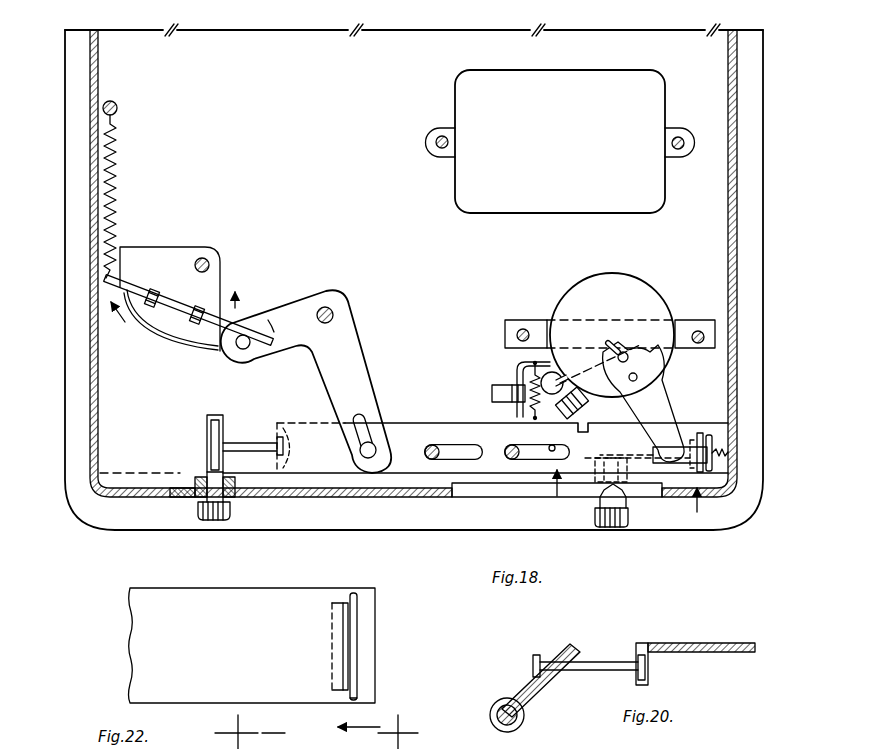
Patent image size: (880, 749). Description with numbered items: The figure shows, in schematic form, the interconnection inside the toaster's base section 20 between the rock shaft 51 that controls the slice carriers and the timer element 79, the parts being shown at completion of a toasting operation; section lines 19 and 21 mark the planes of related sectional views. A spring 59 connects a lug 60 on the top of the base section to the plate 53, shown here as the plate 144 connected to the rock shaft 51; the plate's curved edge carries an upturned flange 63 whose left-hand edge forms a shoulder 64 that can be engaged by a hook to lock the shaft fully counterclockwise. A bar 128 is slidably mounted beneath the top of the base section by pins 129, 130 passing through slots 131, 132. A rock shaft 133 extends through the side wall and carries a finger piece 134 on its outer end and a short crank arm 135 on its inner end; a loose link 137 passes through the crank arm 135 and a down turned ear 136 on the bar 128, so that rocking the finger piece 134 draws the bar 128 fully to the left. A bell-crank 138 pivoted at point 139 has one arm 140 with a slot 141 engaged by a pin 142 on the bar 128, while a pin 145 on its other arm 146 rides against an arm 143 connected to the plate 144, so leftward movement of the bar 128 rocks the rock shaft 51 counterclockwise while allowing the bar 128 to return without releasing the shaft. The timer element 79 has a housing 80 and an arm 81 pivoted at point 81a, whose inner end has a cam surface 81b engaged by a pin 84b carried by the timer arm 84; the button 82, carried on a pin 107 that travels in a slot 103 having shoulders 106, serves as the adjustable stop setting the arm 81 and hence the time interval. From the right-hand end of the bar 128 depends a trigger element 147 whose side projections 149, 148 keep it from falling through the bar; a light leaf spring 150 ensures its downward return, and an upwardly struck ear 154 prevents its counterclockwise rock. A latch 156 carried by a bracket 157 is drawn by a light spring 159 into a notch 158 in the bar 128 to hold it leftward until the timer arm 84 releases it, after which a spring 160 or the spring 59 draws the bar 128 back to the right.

In FIG. 18, the base section 20 is at (145, 455).
In FIG. 18, the section line 19- 19 is at (622, 493).
In FIG. 22, the section line 21- 21 is at (359, 717).
In FIG. 18, the lug 60 is at (119, 109).
In FIG. 18, the spring 59 is at (115, 198).
In FIG. 18, the rock shaft 51 is at (212, 262).
In FIG. 18, the plate 53 is at (205, 287).
In FIG. 18, the plate 144 is at (170, 299).
In FIG. 18, the shoulder 64 is at (119, 328).
In FIG. 18, the upturned flange 63 is at (180, 347).
In FIG. 18, the arm 143 is at (208, 337).
In FIG. 18, the pin 145 is at (243, 351).
In FIG. 18, the bell-crank arm 146 is at (280, 309).
In FIG. 18, the pivot point 139 is at (338, 302).
In FIG. 18, the bell-crank 138 is at (362, 345).
In FIG. 18, the bell-crank arm 140 is at (352, 378).
In FIG. 18, the slot 141 is at (361, 427).
In FIG. 18, the pin 142 is at (361, 452).
In FIG. 18, the down turned ear 136 is at (289, 421).
In FIG. 20, the down turned ear 136 is at (637, 682).
In FIG. 18, the crank arm 135 is at (207, 428).
In FIG. 20, the crank arm 135 is at (573, 651).
In FIG. 18, the link 137 is at (262, 455).
In FIG. 18, the rock shaft 133 is at (203, 491).
In FIG. 20, the rock shaft 133 is at (491, 712).
In FIG. 18, the finger piece 134 is at (213, 522).
In FIG. 18, the pin 129 is at (427, 446).
In FIG. 18, the slot 131 is at (450, 456).
In FIG. 18, the bar 128 is at (458, 421).
In FIG. 22, the bar 128 is at (252, 645).
In FIG. 20, the bar 128 is at (700, 643).
In FIG. 18, the pin 130 is at (507, 440).
In FIG. 18, the slot 132 is at (541, 439).
In FIG. 18, the bracket 157 is at (492, 392).
In FIG. 18, the latch 156 is at (515, 366).
In FIG. 18, the spring 159 is at (539, 402).
In FIG. 18, the arm 84 is at (562, 375).
In FIG. 18, the pin 84b is at (628, 352).
In FIG. 18, the cam surface 81b is at (592, 372).
In FIG. 18, the pivot point 81a is at (640, 377).
In FIG. 18, the arm 81 is at (660, 405).
In FIG. 18, the timer element 79 is at (582, 280).
In FIG. 18, the housing 80 is at (627, 301).
In FIG. 18, the notch 158 is at (588, 430).
In FIG. 18, the leaf spring 150 is at (655, 450).
In FIG. 18, the upwardly struck ear 154 is at (692, 440).
In FIG. 22, the upwardly struck ear 154 is at (333, 660).
In FIG. 18, the trigger element 147 is at (709, 433).
In FIG. 22, the trigger element 147 is at (348, 634).
In FIG. 22, the side projection 149 is at (353, 594).
In FIG. 22, the side projection 148 is at (357, 698).
In FIG. 18, the spring 160 is at (718, 478).
In FIG. 18, the pin 107 is at (633, 457).
In FIG. 18, the shoulder 106 is at (543, 495).
In FIG. 18, the slot 103 is at (500, 497).
In FIG. 18, the button 82 is at (610, 529).